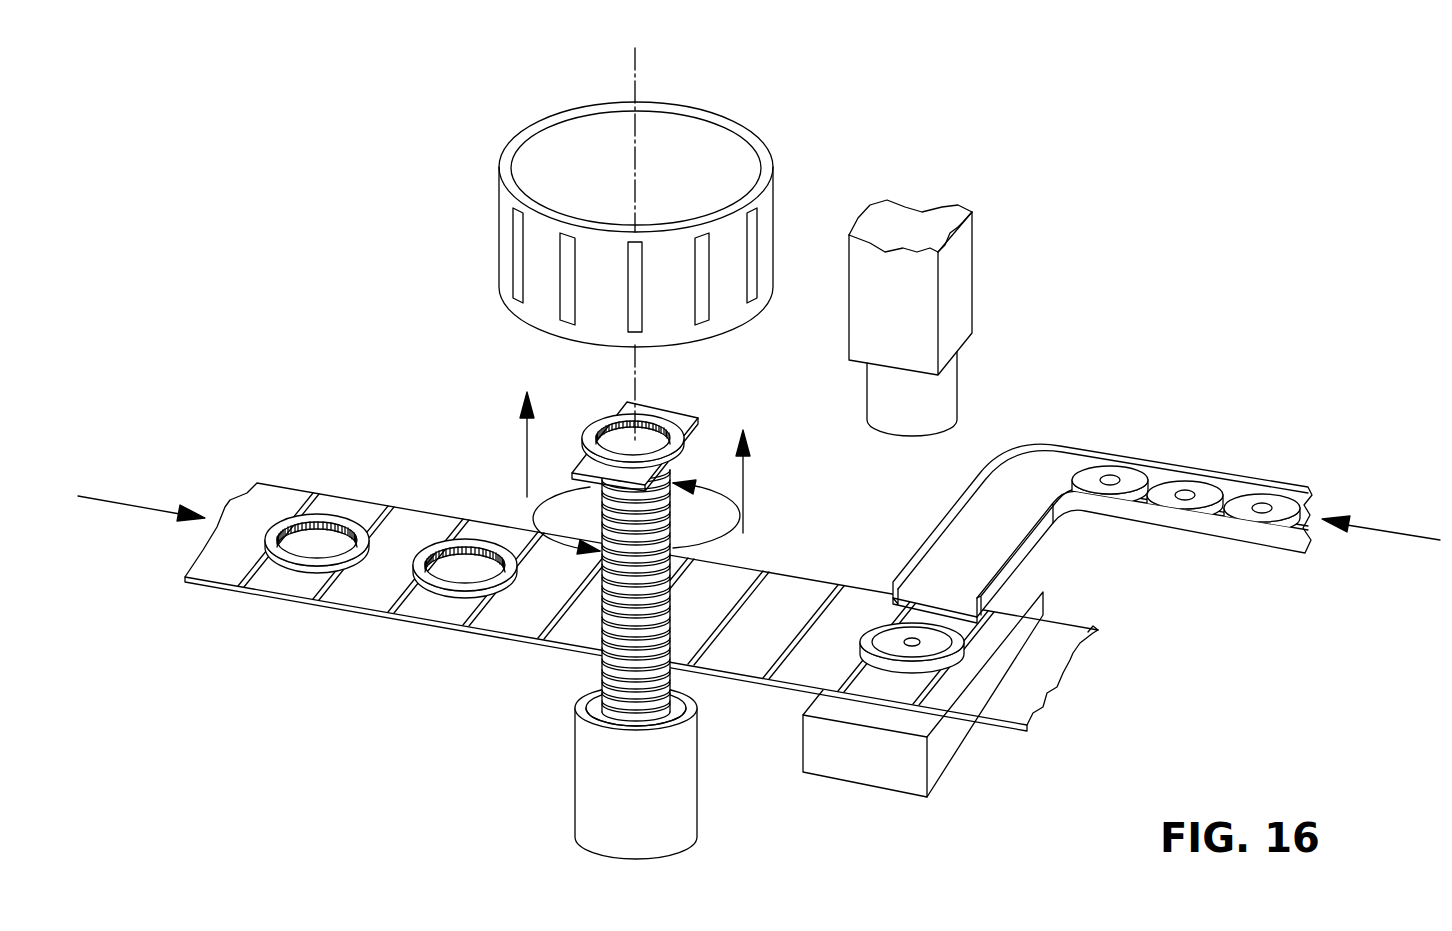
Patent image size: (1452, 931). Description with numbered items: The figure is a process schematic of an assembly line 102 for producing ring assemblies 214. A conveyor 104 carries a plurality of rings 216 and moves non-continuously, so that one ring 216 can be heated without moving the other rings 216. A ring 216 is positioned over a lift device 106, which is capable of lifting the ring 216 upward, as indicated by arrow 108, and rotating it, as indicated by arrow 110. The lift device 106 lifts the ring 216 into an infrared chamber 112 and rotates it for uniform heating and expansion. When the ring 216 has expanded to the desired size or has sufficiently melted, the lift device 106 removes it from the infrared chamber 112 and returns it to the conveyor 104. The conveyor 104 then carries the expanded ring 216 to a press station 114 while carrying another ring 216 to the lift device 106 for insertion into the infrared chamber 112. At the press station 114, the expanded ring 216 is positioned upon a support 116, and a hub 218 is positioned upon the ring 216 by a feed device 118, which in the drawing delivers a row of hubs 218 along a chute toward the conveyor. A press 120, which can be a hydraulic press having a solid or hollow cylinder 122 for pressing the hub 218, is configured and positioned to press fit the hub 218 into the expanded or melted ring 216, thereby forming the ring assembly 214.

The assembly line 102 is at (314, 355).
The conveyor 104 is at (305, 600).
The lift device 106 is at (586, 780).
The arrow 108 is at (527, 440).
The arrow 110 is at (556, 521).
The infrared chamber 112 is at (499, 214).
The press station 114 is at (962, 623).
The support 116 is at (952, 750).
The feed device 118 is at (1230, 532).
The press 120 is at (955, 303).
The cylinder 122 is at (937, 400).
The ring assembly 214 is at (885, 620).
The ring 216 is at (428, 547).
The hub 218 is at (1193, 482).